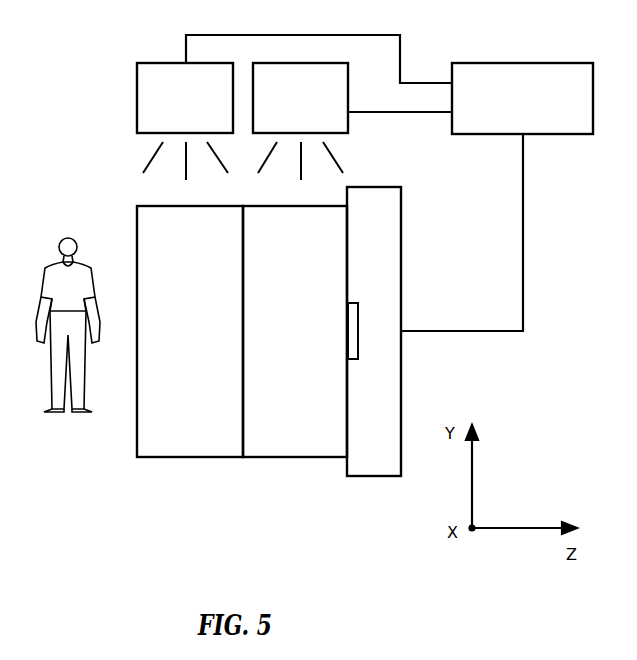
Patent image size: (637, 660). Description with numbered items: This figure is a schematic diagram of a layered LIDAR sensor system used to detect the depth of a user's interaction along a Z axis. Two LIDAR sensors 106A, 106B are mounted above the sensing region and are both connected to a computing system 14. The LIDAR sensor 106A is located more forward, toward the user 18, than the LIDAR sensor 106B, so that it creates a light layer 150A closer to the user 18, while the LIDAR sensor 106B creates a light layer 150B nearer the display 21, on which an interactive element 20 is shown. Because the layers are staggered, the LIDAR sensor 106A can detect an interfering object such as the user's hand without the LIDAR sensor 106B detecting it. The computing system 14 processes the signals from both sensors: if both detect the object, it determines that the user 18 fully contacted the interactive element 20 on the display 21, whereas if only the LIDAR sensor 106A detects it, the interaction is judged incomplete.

The computing system 14 is at (523, 63).
The user 18 is at (75, 237).
The interactive element 20 is at (353, 303).
The display 21 is at (375, 187).
The LIDAR sensor 106A is at (215, 63).
The LIDAR sensor 106B is at (328, 63).
The light layer 150A is at (190, 457).
The light layer 150B is at (274, 457).